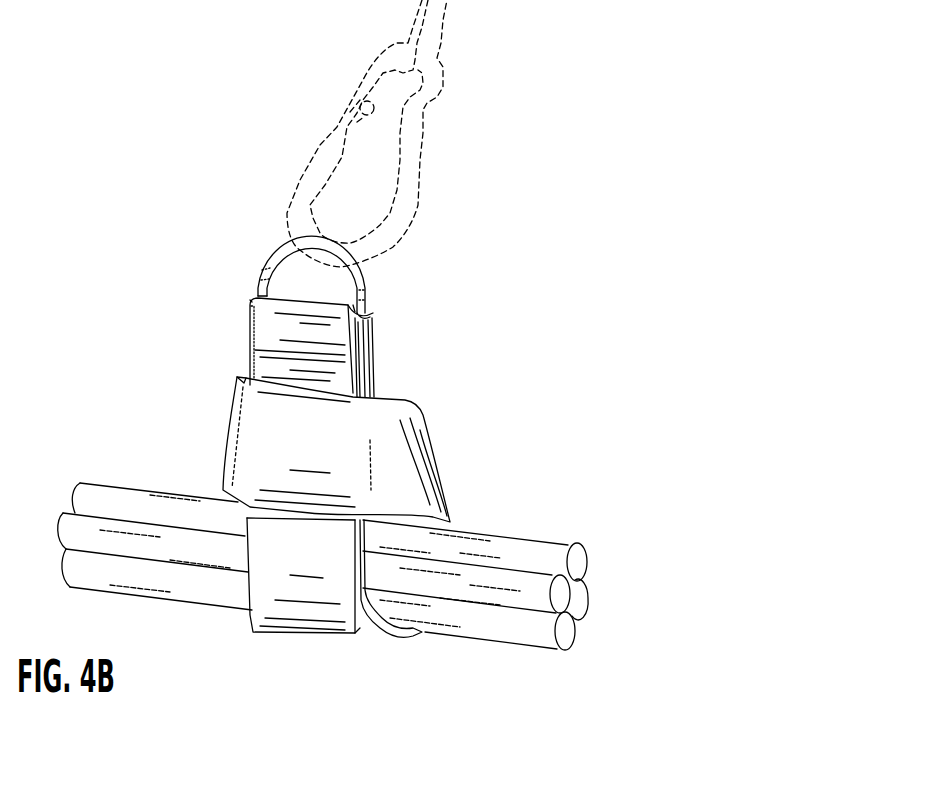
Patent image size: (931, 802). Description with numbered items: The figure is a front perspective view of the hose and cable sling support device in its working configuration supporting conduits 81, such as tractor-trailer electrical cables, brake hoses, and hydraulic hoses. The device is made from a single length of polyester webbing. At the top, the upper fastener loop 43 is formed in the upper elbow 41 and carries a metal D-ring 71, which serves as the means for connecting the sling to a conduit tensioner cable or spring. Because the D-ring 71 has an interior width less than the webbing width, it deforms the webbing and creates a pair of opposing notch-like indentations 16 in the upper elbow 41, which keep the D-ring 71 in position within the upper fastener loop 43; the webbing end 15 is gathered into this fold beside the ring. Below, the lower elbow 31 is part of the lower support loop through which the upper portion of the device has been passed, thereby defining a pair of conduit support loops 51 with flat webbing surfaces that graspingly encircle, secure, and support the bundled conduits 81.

The strands / cords 15 is at (370, 335).
The opposing notch-like indentations 16 is at (249, 299).
The lower elbow 31 is at (271, 432).
The upper elbow 41 is at (298, 288).
The upper fastener loop 43 is at (375, 317).
The conduit support loops 51 is at (246, 615).
The metal D-ring 71 is at (284, 231).
The conduits 81 is at (595, 615).